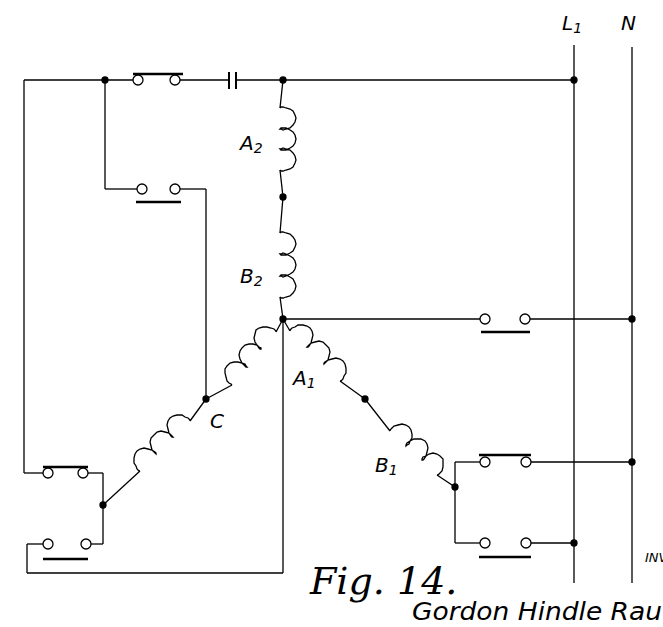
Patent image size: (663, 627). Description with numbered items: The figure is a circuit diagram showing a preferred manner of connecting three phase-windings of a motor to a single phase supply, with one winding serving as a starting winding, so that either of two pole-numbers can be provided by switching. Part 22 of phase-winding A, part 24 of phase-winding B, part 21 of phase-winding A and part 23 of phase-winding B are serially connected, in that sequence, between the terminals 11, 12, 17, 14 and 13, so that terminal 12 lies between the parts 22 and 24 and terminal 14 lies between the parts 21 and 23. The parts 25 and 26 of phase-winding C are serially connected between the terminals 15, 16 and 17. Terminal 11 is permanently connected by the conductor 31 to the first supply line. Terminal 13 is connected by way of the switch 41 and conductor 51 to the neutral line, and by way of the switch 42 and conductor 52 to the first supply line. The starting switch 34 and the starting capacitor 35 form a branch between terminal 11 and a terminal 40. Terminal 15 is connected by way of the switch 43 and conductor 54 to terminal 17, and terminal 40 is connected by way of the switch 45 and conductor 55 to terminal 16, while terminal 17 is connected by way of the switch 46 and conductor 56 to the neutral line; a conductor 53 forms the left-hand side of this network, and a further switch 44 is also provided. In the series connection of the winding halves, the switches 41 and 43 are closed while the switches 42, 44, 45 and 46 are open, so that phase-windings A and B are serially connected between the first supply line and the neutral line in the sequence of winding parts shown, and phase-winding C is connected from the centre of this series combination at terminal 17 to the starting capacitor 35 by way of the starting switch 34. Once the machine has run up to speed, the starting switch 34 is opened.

The terminal 11 is at (282, 78).
The terminal 12 is at (287, 197).
The terminal 13 is at (452, 488).
The terminal 14 is at (362, 402).
The terminal 15 is at (107, 505).
The terminal 16 is at (212, 397).
The terminal 17 is at (288, 313).
The part of phase-winding A 21 is at (338, 346).
The part of phase-winding A 22 is at (294, 133).
The part of phase-winding B 23 is at (422, 443).
The part of phase-winding B 24 is at (294, 257).
The part of phase-winding C 25 is at (160, 433).
The part of phase-winding C 26 is at (242, 360).
The conductor 31 is at (417, 78).
The starting switch 34 is at (157, 73).
The starting capacitor 35 is at (226, 76).
The terminal 40 is at (105, 78).
The switch 41 is at (506, 454).
The switch 42 is at (505, 559).
The switch 43 is at (67, 466).
The switch 44 is at (88, 559).
The switch 45 is at (163, 204).
The switch 46 is at (506, 334).
The conductor 51 is at (601, 461).
The conductor 52 is at (556, 535).
The conductor 53 is at (26, 312).
The conductor 54 is at (242, 574).
The conductor 55 is at (206, 281).
The conductor 56 is at (441, 318).